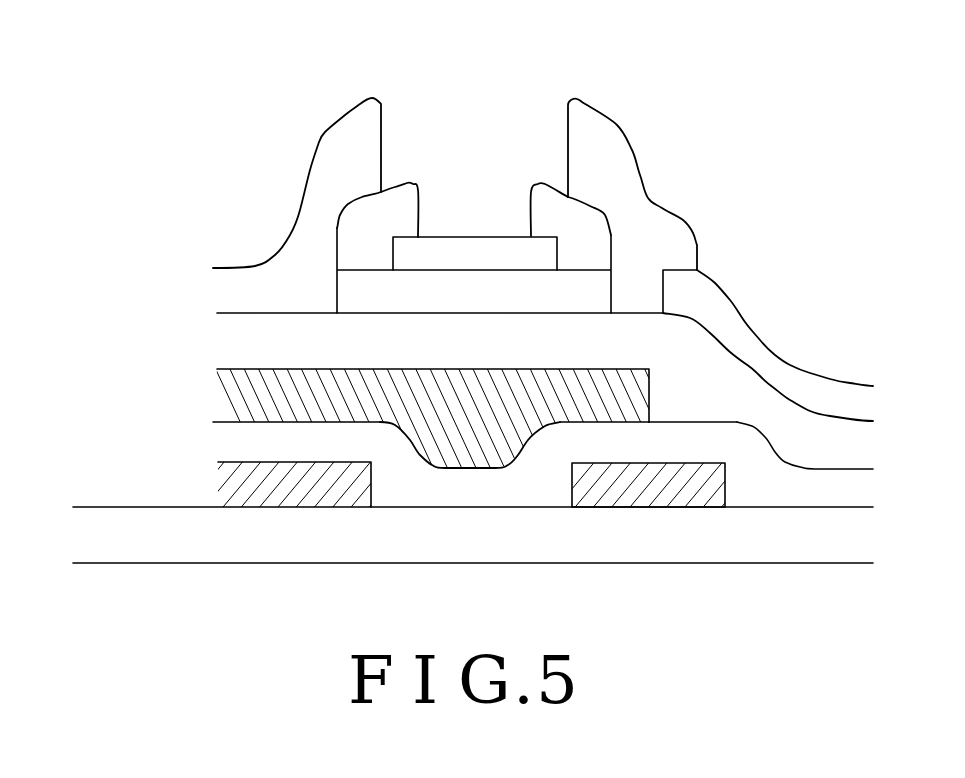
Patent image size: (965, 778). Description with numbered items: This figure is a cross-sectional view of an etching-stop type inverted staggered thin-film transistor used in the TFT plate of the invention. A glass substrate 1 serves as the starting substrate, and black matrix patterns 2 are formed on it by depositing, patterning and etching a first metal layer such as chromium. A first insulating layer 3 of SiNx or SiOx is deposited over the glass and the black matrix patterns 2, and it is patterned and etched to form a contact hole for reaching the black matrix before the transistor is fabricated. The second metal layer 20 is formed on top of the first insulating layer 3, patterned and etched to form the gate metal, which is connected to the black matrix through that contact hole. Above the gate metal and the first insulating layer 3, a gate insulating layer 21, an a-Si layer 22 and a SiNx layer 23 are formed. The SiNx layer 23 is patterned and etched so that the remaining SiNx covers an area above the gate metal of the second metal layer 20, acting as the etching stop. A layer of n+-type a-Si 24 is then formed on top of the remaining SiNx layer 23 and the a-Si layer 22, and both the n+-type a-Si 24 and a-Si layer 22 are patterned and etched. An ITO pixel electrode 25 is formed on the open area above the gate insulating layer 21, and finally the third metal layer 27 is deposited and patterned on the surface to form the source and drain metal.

The glass substrate 1 is at (582, 547).
The black matrix patterns 2 is at (250, 463).
The first insulating layer 3 is at (757, 458).
The second metal layer 20 is at (305, 393).
The gate insulating layer 21 is at (317, 325).
The a-Si layer 22 is at (582, 291).
The SiNx layer 23 is at (542, 250).
The n+-type a-Si layer 24 is at (412, 198).
The ITO pixel electrode 25 is at (723, 323).
The third metal layer 27 is at (370, 133).